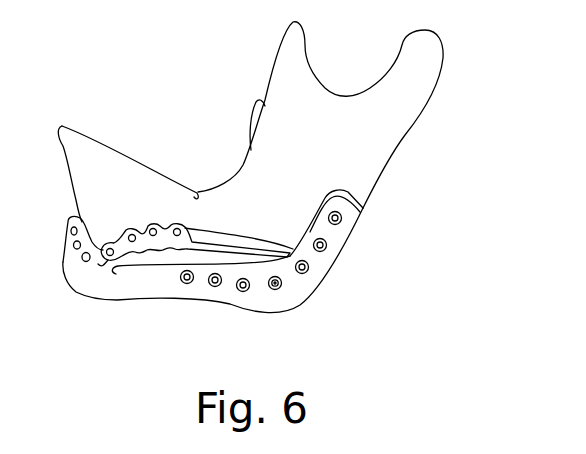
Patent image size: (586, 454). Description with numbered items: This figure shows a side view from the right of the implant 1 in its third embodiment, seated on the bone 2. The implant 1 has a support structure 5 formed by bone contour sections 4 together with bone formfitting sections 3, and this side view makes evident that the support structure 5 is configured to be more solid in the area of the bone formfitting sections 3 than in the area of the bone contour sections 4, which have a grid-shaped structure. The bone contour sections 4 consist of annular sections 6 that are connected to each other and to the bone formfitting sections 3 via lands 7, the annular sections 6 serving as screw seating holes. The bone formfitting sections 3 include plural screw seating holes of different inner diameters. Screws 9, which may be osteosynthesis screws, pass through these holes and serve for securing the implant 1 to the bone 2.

The implant 1 is at (338, 292).
The bone 2 is at (358, 155).
The bone formfitting section 3 is at (337, 240).
The bone contour section 4 is at (181, 225).
The support structure 5 is at (127, 280).
The annular section 6 is at (152, 222).
The land 7 is at (115, 228).
The screw 9 is at (283, 290).